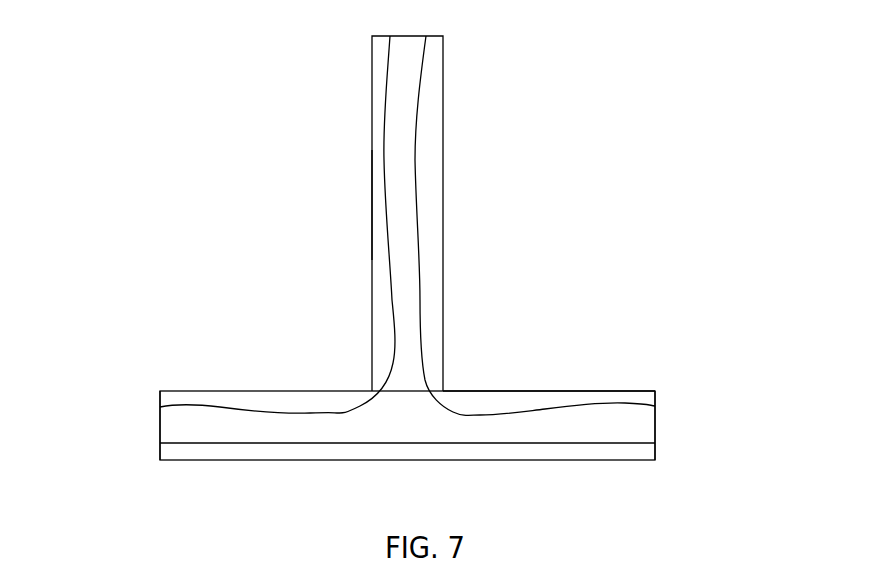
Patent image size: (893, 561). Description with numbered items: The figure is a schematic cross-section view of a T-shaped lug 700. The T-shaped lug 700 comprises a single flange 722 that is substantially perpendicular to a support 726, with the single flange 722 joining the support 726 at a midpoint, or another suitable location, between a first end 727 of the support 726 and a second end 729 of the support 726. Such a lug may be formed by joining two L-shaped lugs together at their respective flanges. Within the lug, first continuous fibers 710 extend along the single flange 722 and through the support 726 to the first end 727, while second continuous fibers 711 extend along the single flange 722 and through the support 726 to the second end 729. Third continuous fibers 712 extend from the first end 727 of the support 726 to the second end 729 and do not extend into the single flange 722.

The T-shaped lug 700 is at (548, 92).
The first continuous fibers 710 is at (387, 105).
The second continuous fibers 711 is at (518, 413).
The third continuous fibers 712 is at (217, 443).
The single flange 722 is at (372, 213).
The support 726 is at (608, 391).
The first end 727 is at (160, 426).
The second end 729 is at (656, 423).